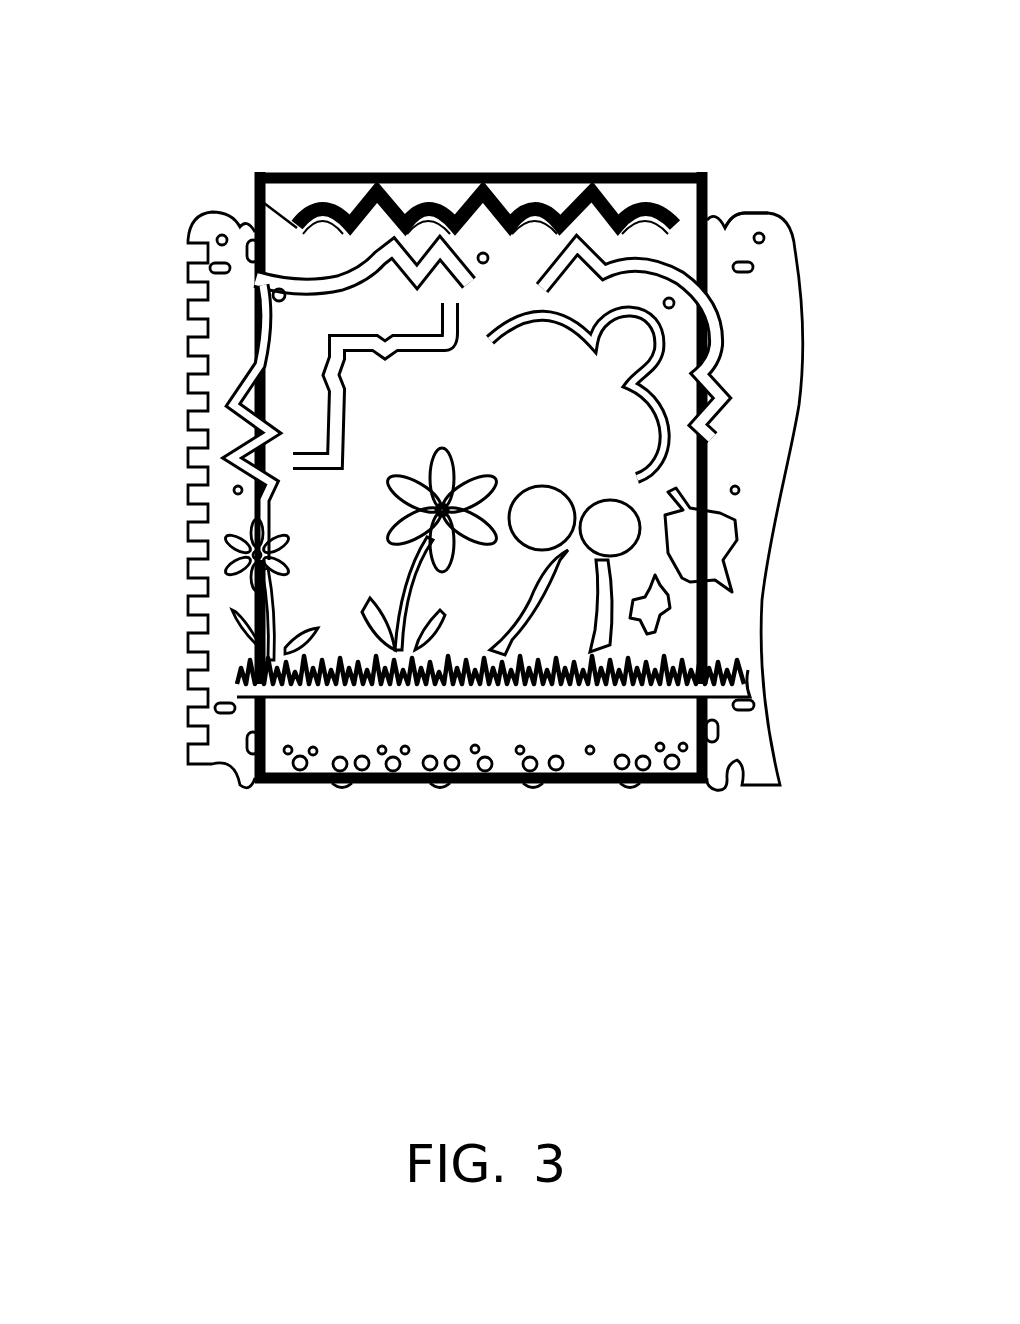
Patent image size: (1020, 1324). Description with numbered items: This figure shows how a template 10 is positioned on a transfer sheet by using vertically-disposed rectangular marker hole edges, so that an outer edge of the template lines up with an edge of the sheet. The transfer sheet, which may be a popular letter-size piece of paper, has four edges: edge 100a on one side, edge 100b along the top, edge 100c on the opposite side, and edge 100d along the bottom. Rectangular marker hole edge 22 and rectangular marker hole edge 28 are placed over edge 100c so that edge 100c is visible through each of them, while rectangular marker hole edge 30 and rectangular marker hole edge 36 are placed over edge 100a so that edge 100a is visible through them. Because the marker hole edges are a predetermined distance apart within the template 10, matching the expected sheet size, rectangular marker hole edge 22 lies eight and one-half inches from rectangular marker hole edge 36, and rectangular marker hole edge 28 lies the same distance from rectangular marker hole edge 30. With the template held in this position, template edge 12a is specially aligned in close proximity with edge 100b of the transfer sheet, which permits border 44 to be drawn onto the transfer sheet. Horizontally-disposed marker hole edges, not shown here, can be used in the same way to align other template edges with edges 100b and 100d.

The template 10 is at (298, 195).
The template edge 12a is at (501, 414).
The rectangular marker hole edge 22 is at (255, 255).
The rectangular marker hole edge 28 is at (215, 740).
The rectangular marker hole edge 30 is at (720, 728).
The rectangular marker hole edge 36 is at (723, 223).
The border 44 is at (585, 238).
The edge of transfer sheet 100a is at (718, 205).
The edge of transfer sheet 100b is at (447, 175).
The edge of transfer sheet 100c is at (250, 200).
The edge of transfer sheet 100d is at (492, 783).